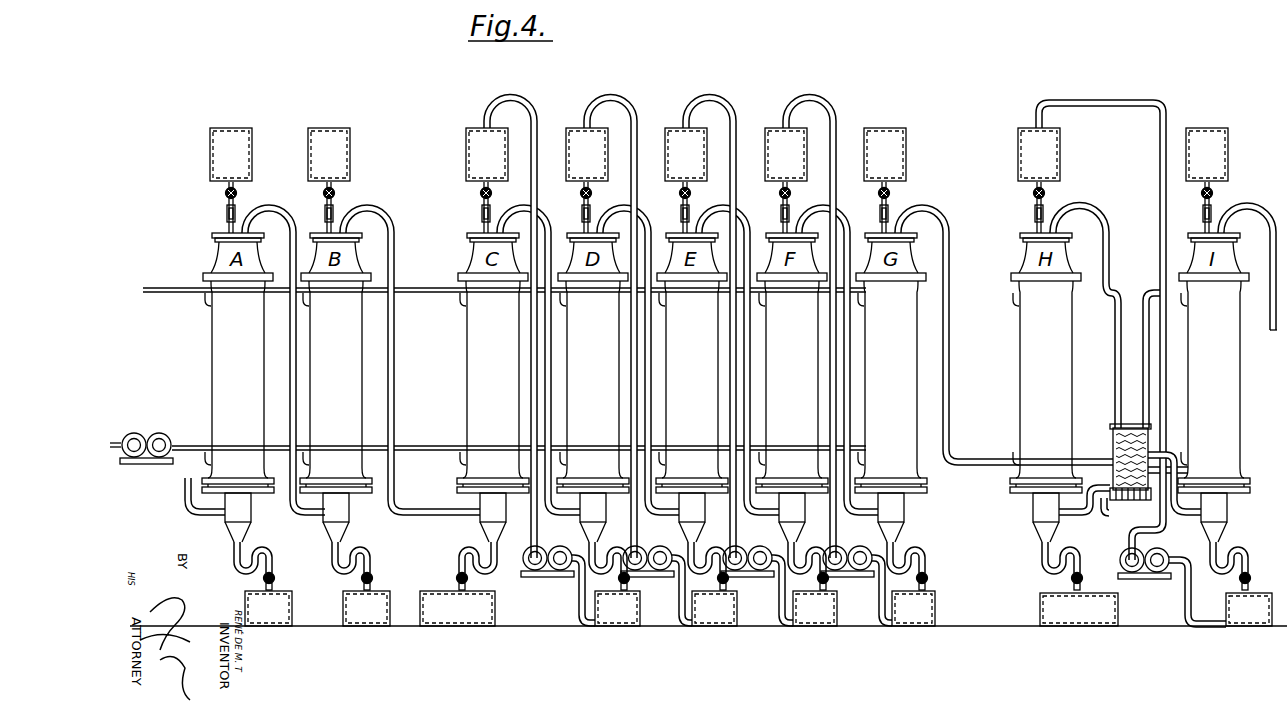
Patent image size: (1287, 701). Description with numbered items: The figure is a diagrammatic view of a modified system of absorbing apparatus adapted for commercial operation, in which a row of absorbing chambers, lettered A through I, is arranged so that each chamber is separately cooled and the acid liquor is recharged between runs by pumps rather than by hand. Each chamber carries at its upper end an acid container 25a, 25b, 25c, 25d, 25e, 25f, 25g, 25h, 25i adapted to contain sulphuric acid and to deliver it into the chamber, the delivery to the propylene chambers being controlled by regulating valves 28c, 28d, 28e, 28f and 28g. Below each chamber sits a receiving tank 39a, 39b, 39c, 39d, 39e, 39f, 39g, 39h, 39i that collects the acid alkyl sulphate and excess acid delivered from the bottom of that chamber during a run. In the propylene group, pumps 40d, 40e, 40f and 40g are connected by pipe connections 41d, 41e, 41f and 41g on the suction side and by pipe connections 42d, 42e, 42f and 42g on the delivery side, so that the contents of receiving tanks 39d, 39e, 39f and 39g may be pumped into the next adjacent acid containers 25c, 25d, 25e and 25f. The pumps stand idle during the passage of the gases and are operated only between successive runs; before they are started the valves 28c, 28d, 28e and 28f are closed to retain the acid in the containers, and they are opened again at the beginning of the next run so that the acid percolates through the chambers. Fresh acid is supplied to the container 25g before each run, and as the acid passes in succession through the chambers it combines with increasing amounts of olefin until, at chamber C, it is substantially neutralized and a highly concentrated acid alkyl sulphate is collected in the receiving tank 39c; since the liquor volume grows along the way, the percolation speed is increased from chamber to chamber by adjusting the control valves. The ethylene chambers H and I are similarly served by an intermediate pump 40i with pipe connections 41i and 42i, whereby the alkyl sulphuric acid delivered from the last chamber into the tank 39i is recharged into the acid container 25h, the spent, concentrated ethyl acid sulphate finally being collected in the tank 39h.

The acid container 25a is at (242, 152).
The acid container 25b is at (340, 152).
The acid container 25c is at (474, 140).
The acid container 25d is at (580, 140).
The acid container 25e is at (680, 140).
The acid container 25f is at (776, 140).
The acid container 25g is at (883, 143).
The acid container 25h is at (1022, 144).
The acid container 25i is at (1210, 143).
The regulating valve 28c is at (481, 195).
The regulating valve 28d is at (582, 194).
The regulating valve 28e is at (682, 194).
The regulating valve 28f is at (780, 194).
The regulating valve 28g is at (879, 194).
The receiving tank 39a is at (270, 608).
The receiving tank 39b is at (368, 608).
The receiving tank 39c is at (463, 612).
The receiving tank 39d is at (620, 612).
The receiving tank 39e is at (718, 612).
The receiving tank 39f is at (823, 612).
The receiving tank 39g is at (923, 612).
The receiving tank 39h is at (1076, 617).
The receiving tank 39i is at (1250, 617).
The pump 40d is at (548, 577).
The pump 40e is at (668, 577).
The pump 40f is at (765, 577).
The pump 40g is at (868, 577).
The intermediate pump 40i is at (1150, 579).
The pipe connection 41d is at (578, 600).
The pipe connection 41e is at (679, 600).
The pipe connection 41f is at (780, 603).
The pipe connection 41g is at (880, 603).
The pipe connection 41i is at (1182, 502).
The pipe connection 42d is at (533, 403).
The pipe connection 42e is at (633, 403).
The pipe connection 42f is at (733, 412).
The pipe connection 42g is at (833, 412).
The pipe connection 42i is at (1165, 387).